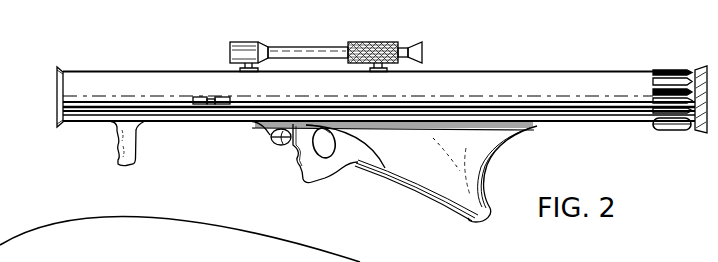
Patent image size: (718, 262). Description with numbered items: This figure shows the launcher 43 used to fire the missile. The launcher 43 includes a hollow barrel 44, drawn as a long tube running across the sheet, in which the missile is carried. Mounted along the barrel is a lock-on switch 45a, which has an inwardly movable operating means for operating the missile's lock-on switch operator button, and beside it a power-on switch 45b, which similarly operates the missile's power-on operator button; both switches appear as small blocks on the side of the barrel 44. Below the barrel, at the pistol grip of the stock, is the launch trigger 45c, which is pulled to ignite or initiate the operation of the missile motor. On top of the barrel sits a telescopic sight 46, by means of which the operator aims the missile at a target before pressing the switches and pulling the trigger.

The launcher 43 is at (83, 72).
The hollow barrel 44 is at (150, 122).
The lock-on switch 45a is at (200, 97).
The power-on switch 45b is at (223, 97).
The launch trigger 45c is at (291, 130).
The telescopic sight 46 is at (303, 47).